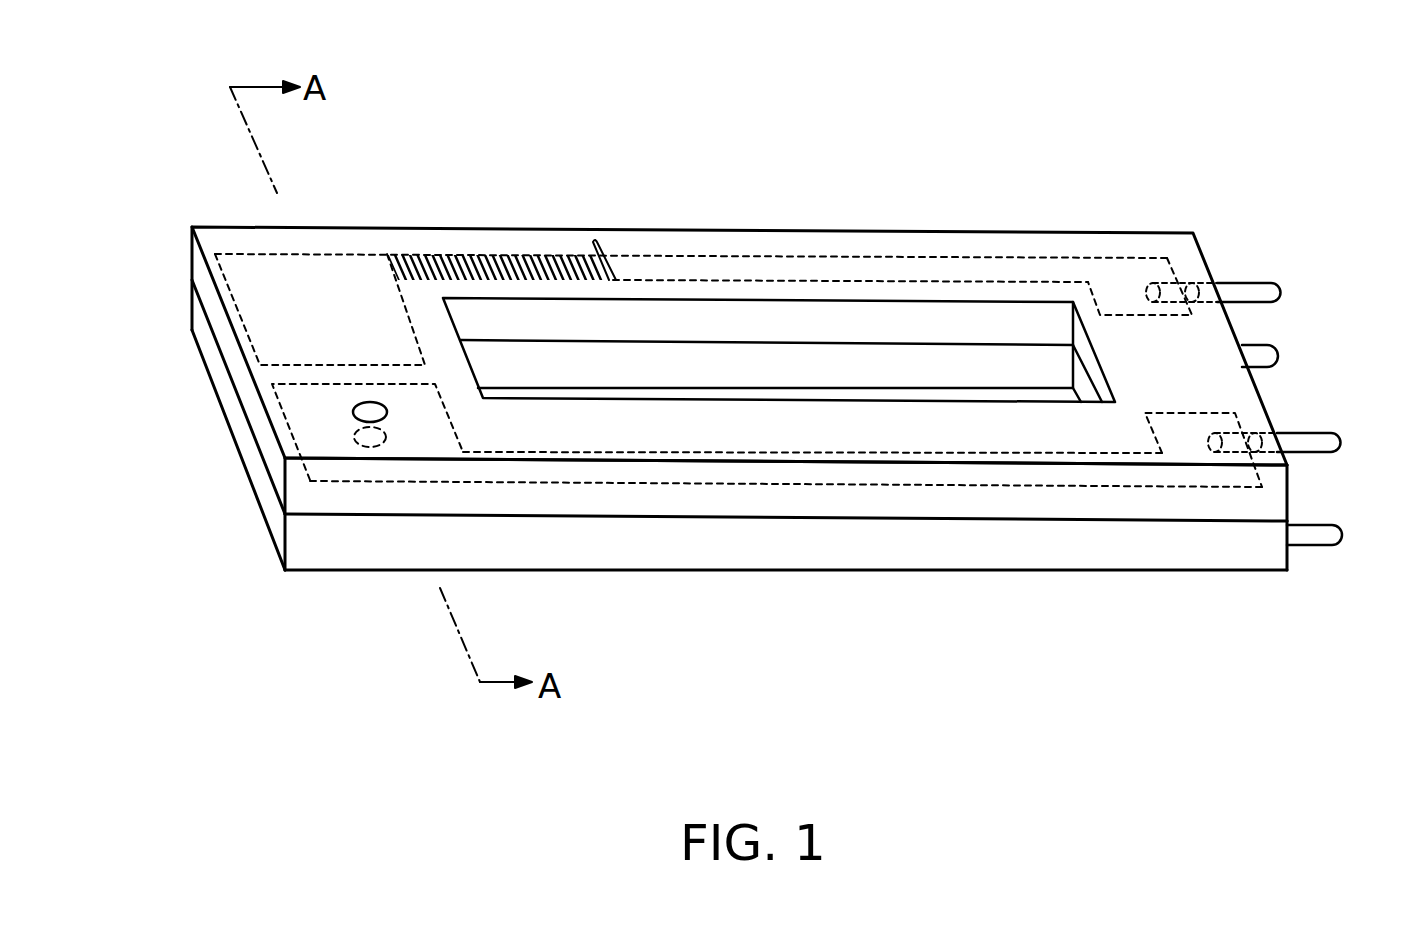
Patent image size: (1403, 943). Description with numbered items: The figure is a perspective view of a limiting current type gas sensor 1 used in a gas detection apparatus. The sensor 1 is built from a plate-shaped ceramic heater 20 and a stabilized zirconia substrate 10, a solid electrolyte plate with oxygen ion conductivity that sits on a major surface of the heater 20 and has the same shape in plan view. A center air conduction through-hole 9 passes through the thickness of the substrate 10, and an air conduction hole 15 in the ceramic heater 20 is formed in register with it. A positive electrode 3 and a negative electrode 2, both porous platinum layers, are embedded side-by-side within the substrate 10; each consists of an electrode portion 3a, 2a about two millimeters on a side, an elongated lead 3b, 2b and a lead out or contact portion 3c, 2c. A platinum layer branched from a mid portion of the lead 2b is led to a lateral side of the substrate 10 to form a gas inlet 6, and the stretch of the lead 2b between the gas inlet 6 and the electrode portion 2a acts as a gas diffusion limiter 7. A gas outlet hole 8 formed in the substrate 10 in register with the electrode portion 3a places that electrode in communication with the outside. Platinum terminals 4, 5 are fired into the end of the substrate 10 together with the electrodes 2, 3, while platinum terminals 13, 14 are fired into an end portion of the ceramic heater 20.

The sensor 1 is at (536, 212).
The negative electrode 2 is at (810, 255).
The electrode portion 2a is at (360, 280).
The elongated lead 2b is at (1030, 270).
The lead out portion 2c is at (1118, 280).
The positive electrode 3 is at (742, 485).
The electrode portion 3a is at (300, 418).
The elongated lead 3b is at (1010, 470).
The lead out portion 3c is at (1180, 437).
The platinum terminal 4 is at (1323, 443).
The platinum terminal 5 is at (1253, 292).
The gas inlet 6 is at (596, 240).
The gas diffusion limiter 7 is at (457, 245).
The gas outlet hole 8 is at (372, 412).
The air conduction through-hole 9 is at (740, 330).
The stabilized zirconia substrate 10 is at (577, 503).
The platinum terminal 13 is at (1315, 535).
The platinum terminal 14 is at (1270, 355).
The air conduction hole 15 is at (908, 370).
The ceramic heater 20 is at (1077, 548).